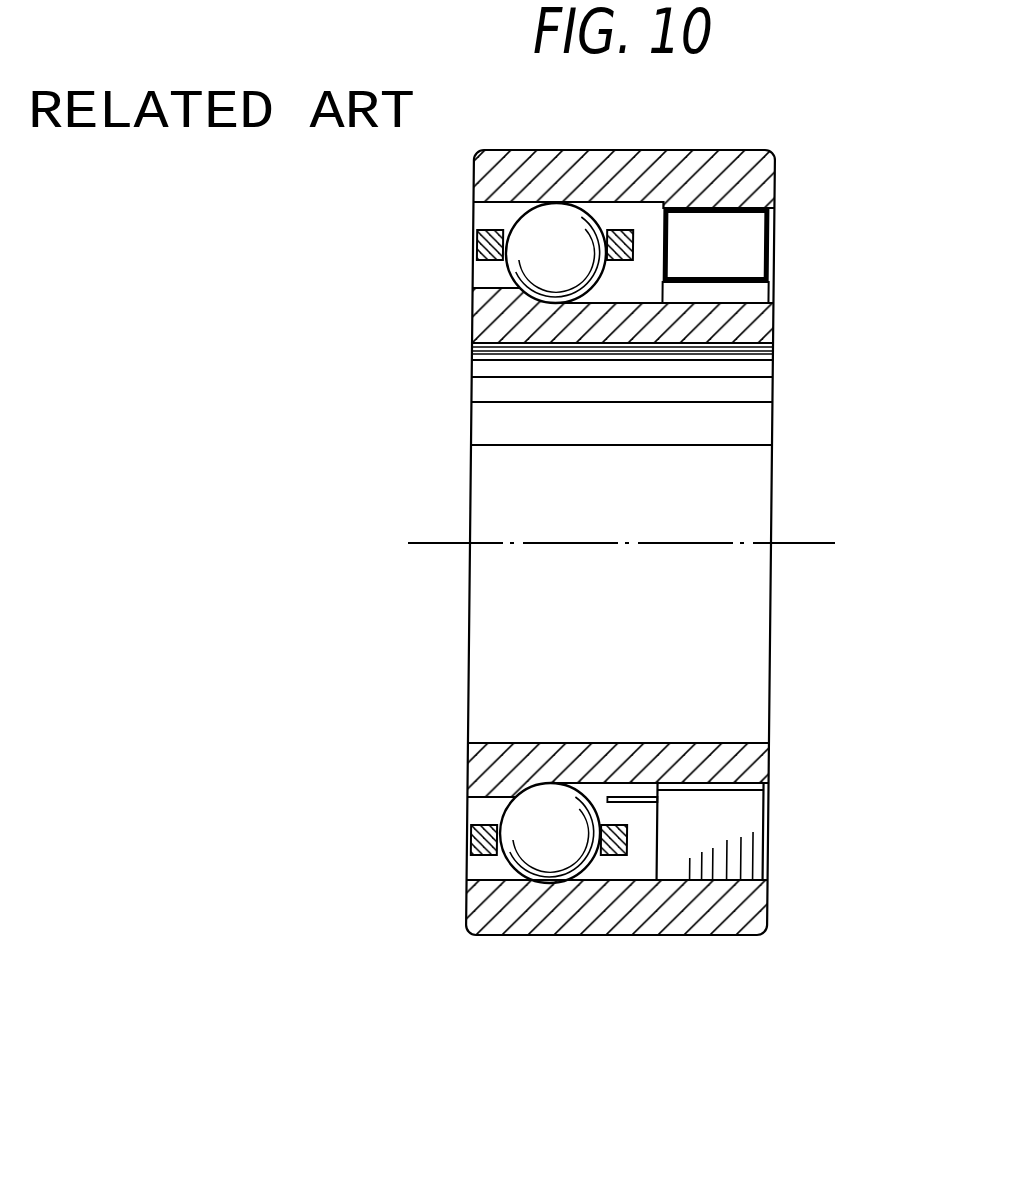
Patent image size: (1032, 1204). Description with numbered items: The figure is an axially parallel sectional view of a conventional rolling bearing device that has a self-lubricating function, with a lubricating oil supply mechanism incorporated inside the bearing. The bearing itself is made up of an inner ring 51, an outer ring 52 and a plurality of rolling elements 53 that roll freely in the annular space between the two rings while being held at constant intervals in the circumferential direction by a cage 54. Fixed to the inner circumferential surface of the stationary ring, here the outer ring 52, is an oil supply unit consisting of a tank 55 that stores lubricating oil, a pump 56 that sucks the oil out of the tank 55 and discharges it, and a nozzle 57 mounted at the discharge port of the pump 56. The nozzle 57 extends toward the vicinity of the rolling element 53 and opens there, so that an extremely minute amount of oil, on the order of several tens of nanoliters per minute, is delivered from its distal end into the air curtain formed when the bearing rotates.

The inner ring 51 is at (518, 757).
The outer ring 52 is at (520, 918).
The rolling element 53 is at (522, 885).
The cage 54 is at (470, 834).
The tank 55 is at (747, 260).
The pump 56 is at (725, 825).
The nozzle 57 is at (632, 797).